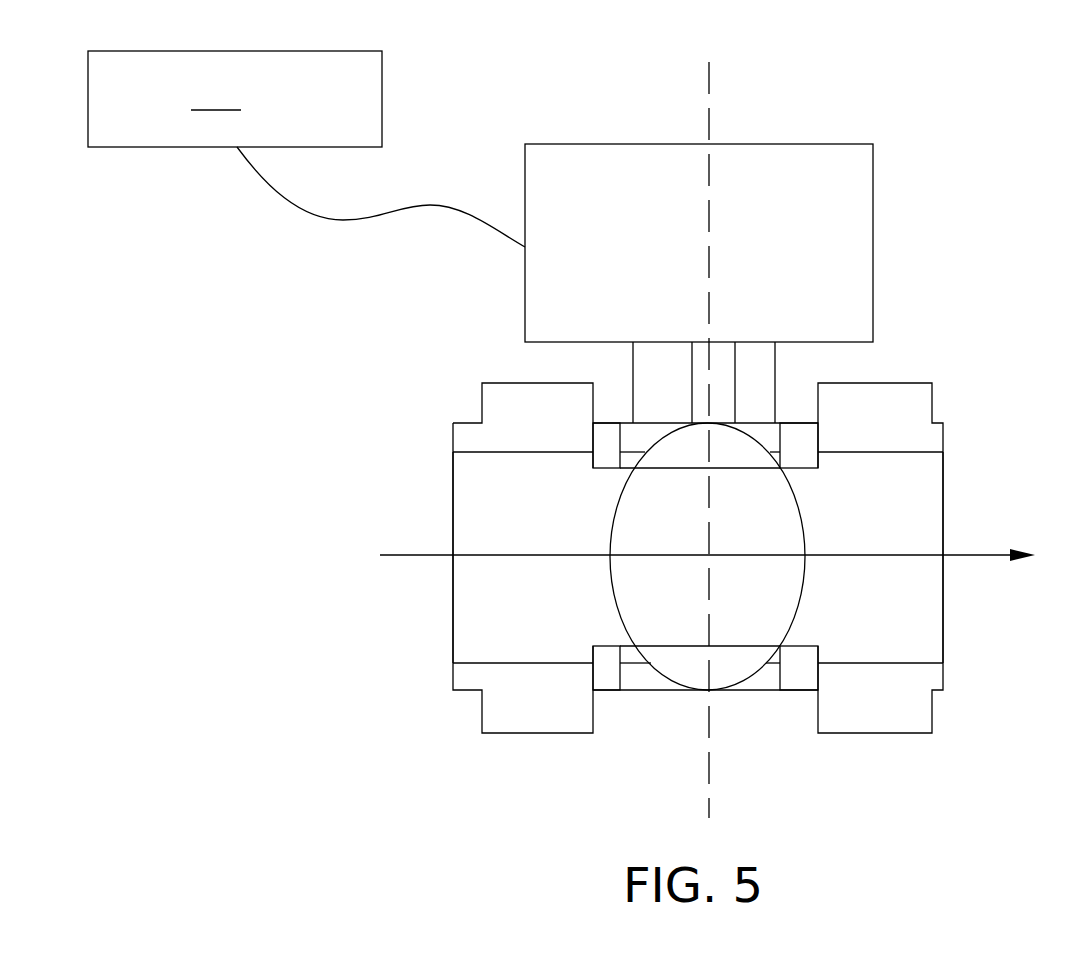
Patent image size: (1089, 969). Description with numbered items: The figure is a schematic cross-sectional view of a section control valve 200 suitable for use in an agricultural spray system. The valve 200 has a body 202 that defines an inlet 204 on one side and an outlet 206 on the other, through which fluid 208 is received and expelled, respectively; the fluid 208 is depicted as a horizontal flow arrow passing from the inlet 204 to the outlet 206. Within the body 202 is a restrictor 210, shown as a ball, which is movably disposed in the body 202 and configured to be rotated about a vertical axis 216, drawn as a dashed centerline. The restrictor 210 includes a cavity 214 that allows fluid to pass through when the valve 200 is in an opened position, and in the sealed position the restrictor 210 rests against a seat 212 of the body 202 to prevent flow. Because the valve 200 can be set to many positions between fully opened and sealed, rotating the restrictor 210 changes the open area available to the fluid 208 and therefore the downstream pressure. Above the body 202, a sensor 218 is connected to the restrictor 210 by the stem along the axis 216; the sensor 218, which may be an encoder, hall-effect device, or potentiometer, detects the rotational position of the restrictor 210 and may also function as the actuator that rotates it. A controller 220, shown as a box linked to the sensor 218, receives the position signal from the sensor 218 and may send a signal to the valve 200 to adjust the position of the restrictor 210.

The section control valve 200 is at (980, 102).
The body 202 is at (493, 397).
The inlet 204 is at (453, 495).
The outlet 206 is at (945, 492).
The fluid 208 is at (403, 557).
The restrictor 210 is at (670, 665).
The seat 212 is at (782, 460).
The cavity 214 is at (740, 610).
The axis 216 is at (709, 123).
The sensor 218 is at (827, 143).
The controller 220 is at (306, 149).